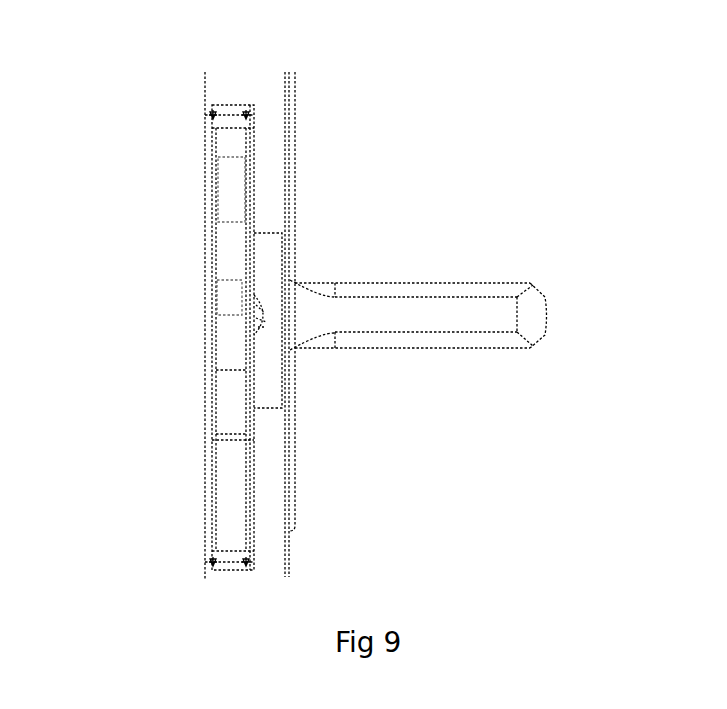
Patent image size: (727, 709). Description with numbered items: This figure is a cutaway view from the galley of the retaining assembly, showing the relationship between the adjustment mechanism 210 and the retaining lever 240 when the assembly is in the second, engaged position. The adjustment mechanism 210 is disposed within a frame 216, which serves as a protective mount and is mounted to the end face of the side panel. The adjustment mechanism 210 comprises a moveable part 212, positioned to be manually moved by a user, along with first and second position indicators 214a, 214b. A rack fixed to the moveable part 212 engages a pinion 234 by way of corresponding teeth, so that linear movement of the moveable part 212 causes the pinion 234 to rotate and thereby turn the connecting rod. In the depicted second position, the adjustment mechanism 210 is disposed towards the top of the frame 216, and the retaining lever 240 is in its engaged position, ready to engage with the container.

The adjustment mechanism 210 is at (215, 132).
The moveable part 212 is at (225, 298).
The first position indicator 214a is at (232, 196).
The second position indicator 214b is at (232, 407).
The frame 216 is at (204, 505).
The pinion 234 is at (256, 318).
The retaining lever 240 is at (457, 310).